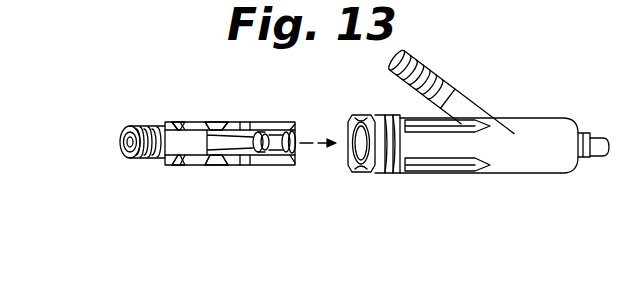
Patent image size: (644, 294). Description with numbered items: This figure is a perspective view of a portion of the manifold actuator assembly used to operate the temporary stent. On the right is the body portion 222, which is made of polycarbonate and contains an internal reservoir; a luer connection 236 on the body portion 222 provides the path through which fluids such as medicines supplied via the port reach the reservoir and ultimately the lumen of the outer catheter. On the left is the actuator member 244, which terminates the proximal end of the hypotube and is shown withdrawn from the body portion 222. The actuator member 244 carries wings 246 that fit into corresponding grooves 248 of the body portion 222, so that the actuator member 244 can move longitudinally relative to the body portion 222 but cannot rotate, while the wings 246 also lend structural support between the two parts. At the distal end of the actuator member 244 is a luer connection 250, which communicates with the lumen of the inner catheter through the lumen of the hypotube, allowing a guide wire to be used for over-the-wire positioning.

The body portion 222 is at (333, 126).
The luer connection 236 is at (435, 57).
The actuator member 244 is at (173, 143).
The wings 246 is at (228, 157).
The grooves 248 is at (348, 122).
The luer connection 250 is at (137, 120).